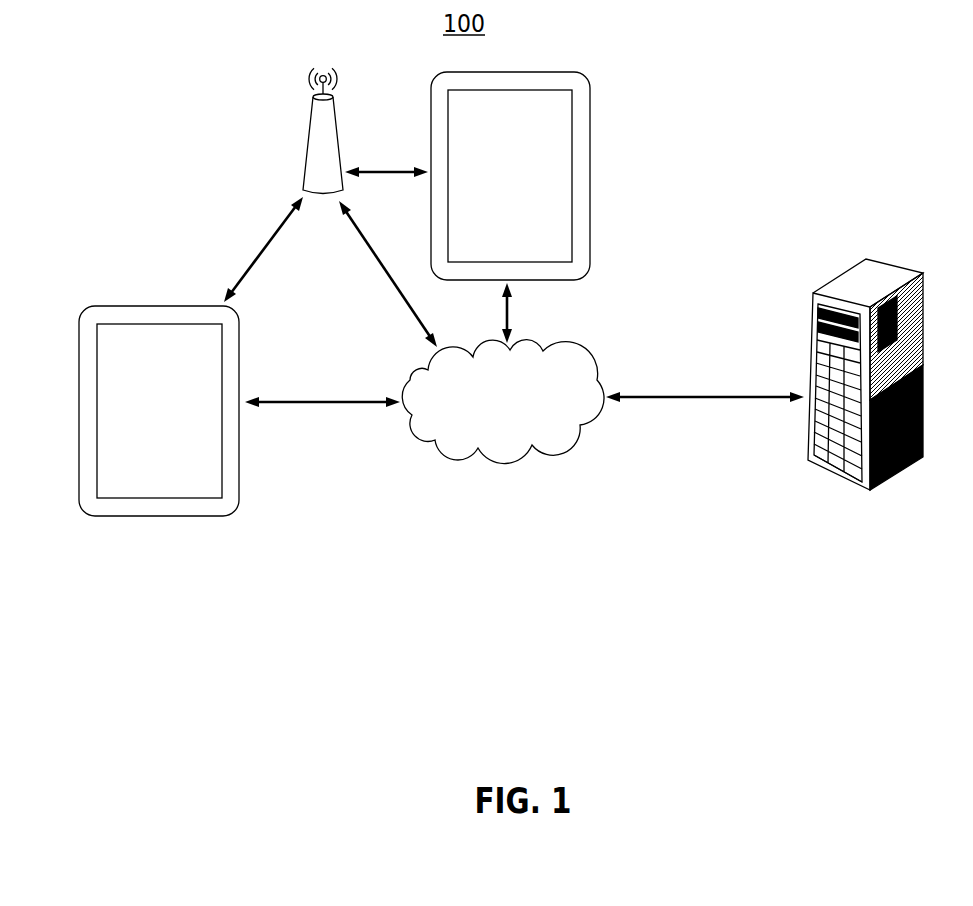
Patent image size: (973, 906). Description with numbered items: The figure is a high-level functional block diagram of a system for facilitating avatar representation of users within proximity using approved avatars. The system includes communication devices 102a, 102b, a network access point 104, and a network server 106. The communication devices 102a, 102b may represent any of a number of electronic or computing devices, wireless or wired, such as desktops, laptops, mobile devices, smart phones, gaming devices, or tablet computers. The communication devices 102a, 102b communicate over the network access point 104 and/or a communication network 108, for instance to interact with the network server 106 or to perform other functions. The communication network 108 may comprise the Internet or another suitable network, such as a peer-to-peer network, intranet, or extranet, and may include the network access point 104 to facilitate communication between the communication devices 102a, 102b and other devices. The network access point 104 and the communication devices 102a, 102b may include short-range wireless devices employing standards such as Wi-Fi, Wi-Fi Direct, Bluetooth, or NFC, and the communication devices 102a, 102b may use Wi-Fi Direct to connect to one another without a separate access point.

The communication device 102a is at (187, 426).
The communication device 102b is at (538, 190).
The network access point 104 is at (339, 134).
The network server 106 is at (897, 266).
The communication network 108 is at (518, 412).